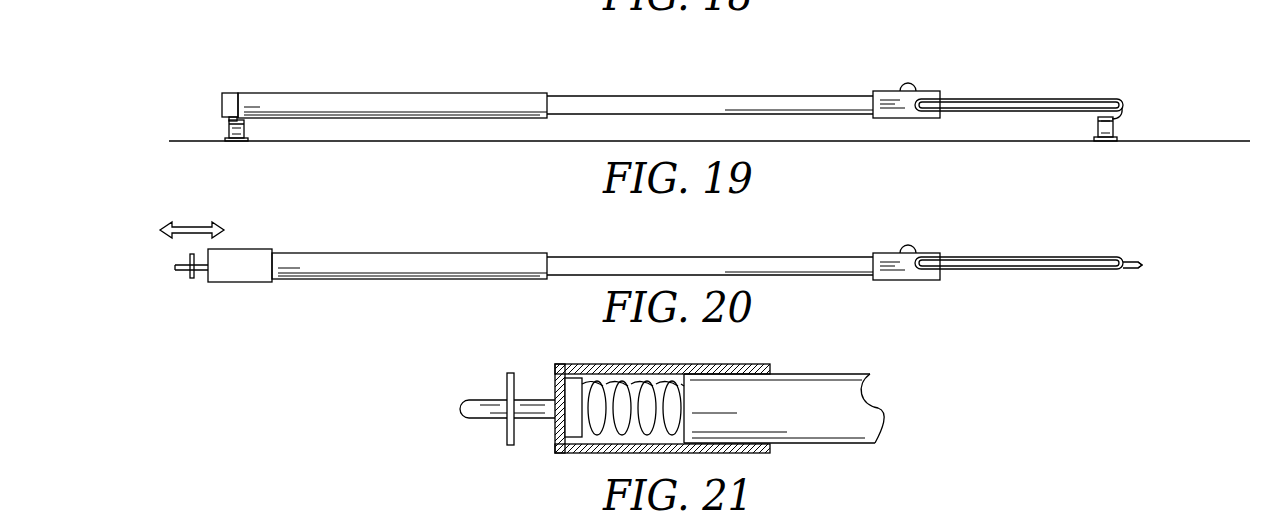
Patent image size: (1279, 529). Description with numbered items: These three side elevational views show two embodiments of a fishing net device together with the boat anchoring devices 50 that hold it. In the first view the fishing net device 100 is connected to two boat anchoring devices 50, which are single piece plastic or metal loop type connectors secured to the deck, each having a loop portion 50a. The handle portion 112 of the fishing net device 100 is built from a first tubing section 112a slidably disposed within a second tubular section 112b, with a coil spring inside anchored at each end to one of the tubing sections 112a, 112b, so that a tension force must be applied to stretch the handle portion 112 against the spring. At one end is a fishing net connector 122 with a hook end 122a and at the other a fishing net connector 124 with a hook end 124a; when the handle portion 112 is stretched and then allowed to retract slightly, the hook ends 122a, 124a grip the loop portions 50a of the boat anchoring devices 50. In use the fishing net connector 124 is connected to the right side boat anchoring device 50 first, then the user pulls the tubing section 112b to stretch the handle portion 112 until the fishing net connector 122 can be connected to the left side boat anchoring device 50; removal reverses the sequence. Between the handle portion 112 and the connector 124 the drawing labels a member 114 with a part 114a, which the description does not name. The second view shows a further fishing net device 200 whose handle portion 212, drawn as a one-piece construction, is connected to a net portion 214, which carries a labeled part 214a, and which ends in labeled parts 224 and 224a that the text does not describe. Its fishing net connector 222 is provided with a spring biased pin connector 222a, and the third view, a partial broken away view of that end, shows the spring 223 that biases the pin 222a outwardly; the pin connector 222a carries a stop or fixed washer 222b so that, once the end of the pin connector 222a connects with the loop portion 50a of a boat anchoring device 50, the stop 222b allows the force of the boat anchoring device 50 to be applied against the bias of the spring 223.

In FIG. 19, the fishing net device 100 is at (178, 34).
In FIG. 19, the handle portion 112 is at (282, 91).
In FIG. 19, the first tubing section 112a is at (700, 95).
In FIG. 19, the second tubular section 112b is at (352, 92).
In FIG. 19, the rod 114 is at (963, 96).
In FIG. 19, the rod inner portion 114a is at (1062, 103).
In FIG. 19, the fishing net connector 122 is at (226, 92).
In FIG. 19, the hook end 122a is at (230, 120).
In FIG. 19, the fishing net connector 124 is at (1115, 98).
In FIG. 19, the hook end 124a is at (1119, 119).
In FIG. 19, the boat anchoring device 50 is at (248, 146).
In FIG. 19, the loop portion 50a is at (246, 123).
In FIG. 20, the fishing net device 200 is at (206, 212).
In FIG. 20, the handle portion 212 is at (404, 252).
In FIG. 21, the handle portion 212 is at (840, 392).
In FIG. 20, the net portion 214 is at (975, 256).
In FIG. 20, the rod inner portion 214a is at (1037, 270).
In FIG. 20, the fishing net connector 222 is at (236, 268).
In FIG. 21, the fishing net connector 222 is at (556, 362).
In FIG. 20, the spring biased pin connector 222a is at (177, 267).
In FIG. 21, the spring biased pin connector 222a is at (458, 408).
In FIG. 21, the stop or fixed washer 222b is at (505, 436).
In FIG. 21, the spring 223 is at (598, 437).
In FIG. 20, the end pin 224 is at (1120, 261).
In FIG. 20, the pin tip 224a is at (1144, 265).